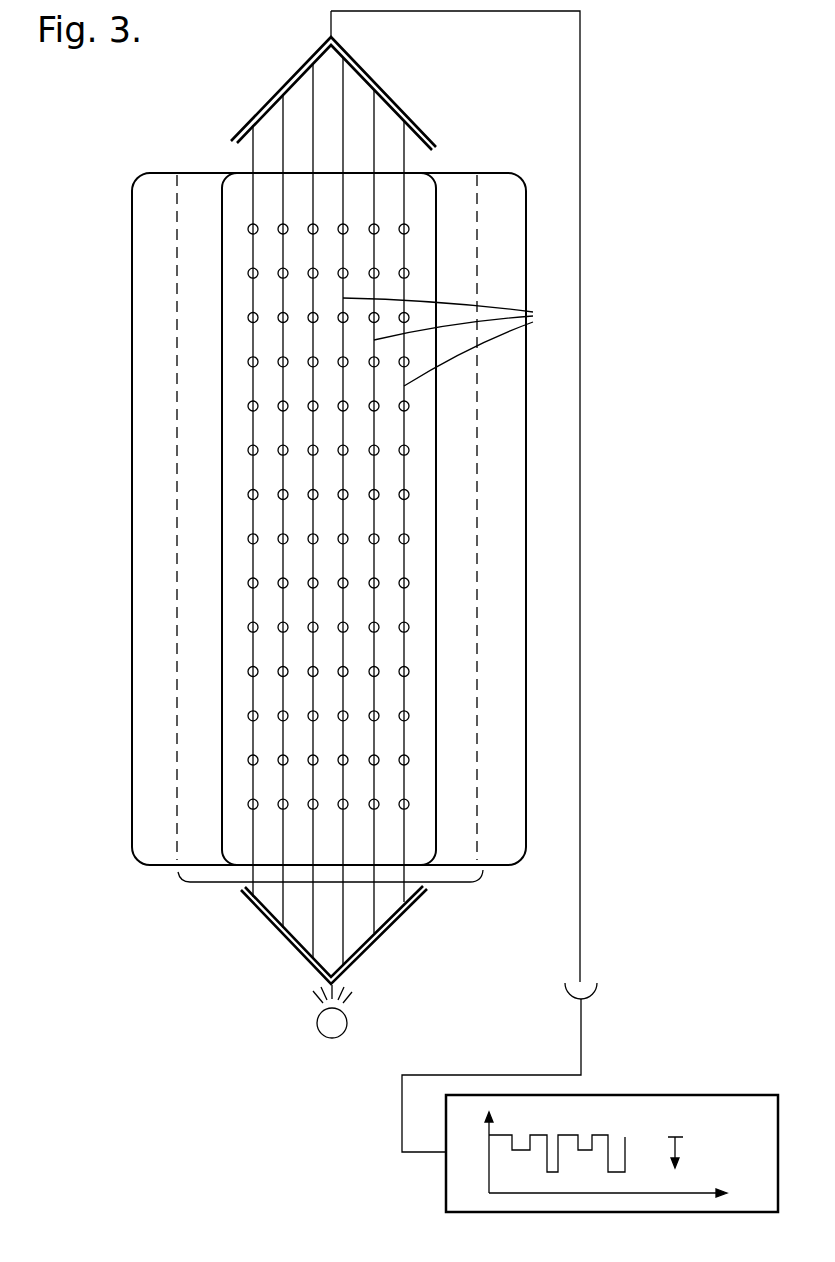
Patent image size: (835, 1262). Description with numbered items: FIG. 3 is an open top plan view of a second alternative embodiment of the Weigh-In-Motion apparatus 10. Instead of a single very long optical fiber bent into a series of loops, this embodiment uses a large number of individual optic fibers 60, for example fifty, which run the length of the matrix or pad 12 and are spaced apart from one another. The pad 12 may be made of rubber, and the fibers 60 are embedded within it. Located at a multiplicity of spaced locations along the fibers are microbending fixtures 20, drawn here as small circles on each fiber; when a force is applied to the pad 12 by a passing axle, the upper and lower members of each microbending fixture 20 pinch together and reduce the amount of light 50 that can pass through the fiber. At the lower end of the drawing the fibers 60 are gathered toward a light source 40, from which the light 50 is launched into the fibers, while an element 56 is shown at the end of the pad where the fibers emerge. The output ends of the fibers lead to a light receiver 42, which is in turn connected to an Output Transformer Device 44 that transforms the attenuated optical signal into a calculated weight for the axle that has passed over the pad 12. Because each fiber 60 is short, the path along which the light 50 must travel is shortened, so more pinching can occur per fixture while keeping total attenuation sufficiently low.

The Weigh-In-Motion apparatus 10 is at (537, 170).
The matrix 12 is at (382, 145).
The microbending fixtures 20 is at (378, 540).
The light source 40 is at (326, 1029).
The light receiver 42 is at (596, 985).
The Output Transformer Device 44 is at (746, 1139).
The light 50 is at (350, 1006).
The fiber holder 56 is at (327, 882).
The individual optic fibers 60 is at (453, 342).